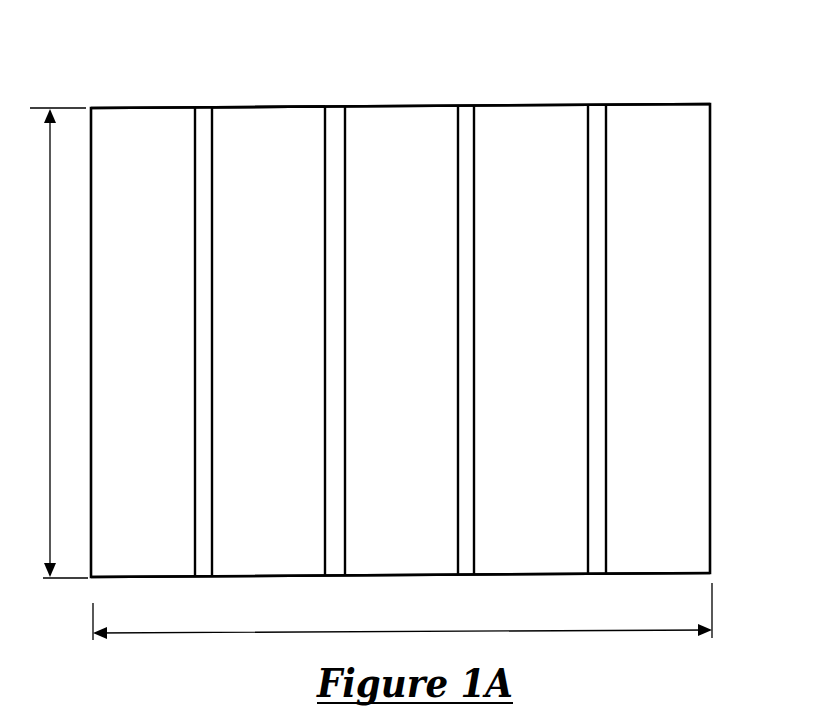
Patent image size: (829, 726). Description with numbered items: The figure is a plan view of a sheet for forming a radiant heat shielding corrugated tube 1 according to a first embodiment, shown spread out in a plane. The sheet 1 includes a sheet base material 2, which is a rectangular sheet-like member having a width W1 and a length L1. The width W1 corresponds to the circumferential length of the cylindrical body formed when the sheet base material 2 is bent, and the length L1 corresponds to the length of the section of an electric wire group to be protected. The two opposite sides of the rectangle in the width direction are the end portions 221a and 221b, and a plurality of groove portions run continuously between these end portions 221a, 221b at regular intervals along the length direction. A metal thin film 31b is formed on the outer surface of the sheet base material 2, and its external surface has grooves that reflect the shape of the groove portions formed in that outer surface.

The sheet for forming a radiant heat shielding corrugated tube 1 is at (758, 147).
The sheet base material 2 is at (692, 272).
The metal thin film 31b is at (272, 115).
The end portion in the width direction 221a is at (125, 108).
The end portion in the width direction 221b is at (122, 578).
The width W1 is at (47, 343).
The length L1 is at (402, 611).